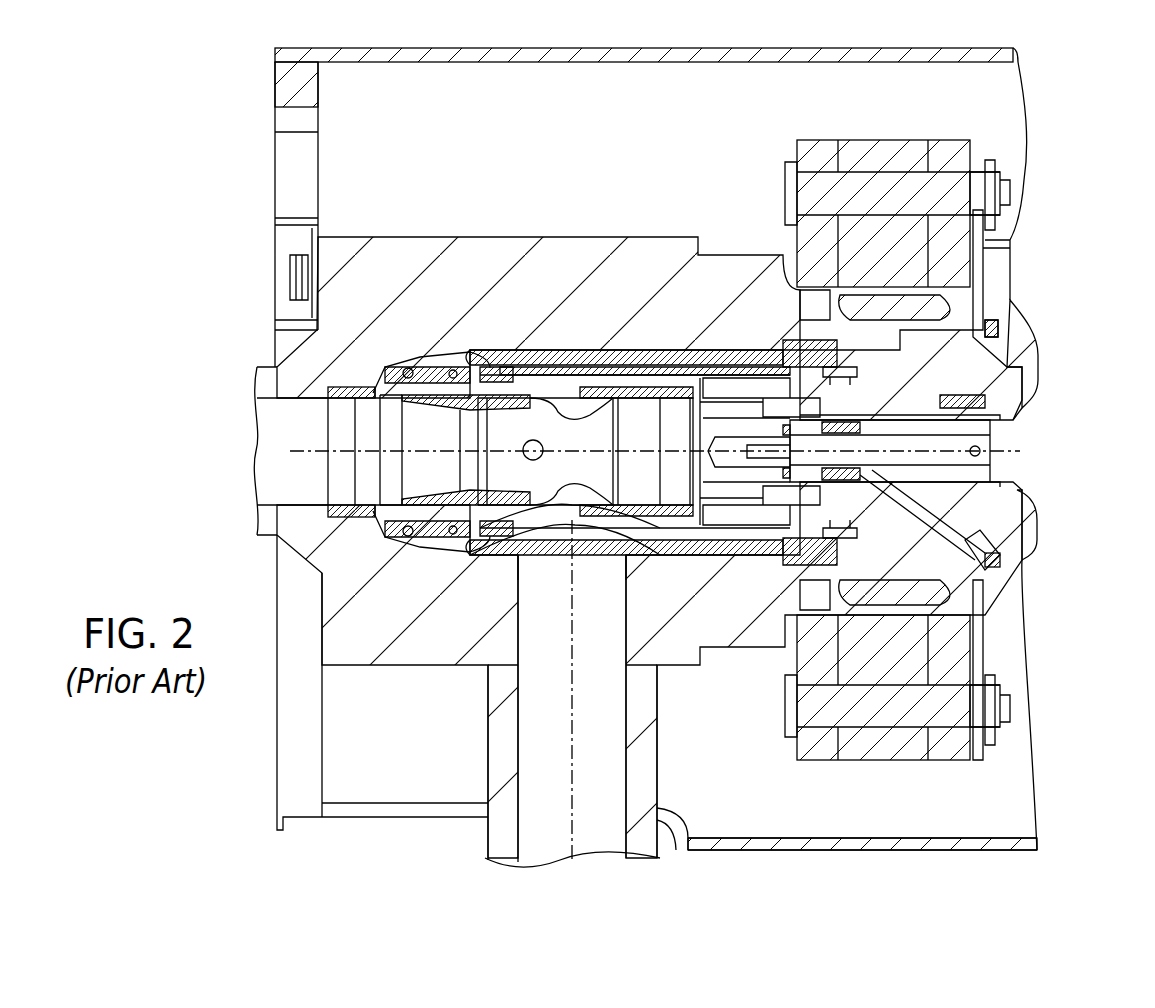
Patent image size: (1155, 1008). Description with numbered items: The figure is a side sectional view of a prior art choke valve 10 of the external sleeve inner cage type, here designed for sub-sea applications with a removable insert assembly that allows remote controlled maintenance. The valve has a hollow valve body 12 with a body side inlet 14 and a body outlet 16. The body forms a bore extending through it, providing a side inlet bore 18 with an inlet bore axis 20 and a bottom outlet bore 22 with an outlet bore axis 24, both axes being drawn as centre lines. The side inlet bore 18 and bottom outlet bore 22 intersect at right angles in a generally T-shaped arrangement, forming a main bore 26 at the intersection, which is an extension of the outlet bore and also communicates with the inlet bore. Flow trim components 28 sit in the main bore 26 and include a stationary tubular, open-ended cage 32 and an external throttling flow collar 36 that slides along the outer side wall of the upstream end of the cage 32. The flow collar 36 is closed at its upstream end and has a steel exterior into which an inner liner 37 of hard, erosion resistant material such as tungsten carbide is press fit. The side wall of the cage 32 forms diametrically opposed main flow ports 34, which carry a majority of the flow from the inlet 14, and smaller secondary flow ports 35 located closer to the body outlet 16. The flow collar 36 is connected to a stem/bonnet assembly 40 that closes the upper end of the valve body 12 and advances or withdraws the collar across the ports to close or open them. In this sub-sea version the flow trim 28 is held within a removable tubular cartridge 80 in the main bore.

The choke valve 10 is at (1044, 597).
The hollow valve body 12 is at (470, 240).
The body side inlet 14 is at (600, 812).
The body outlet 16 is at (263, 492).
The side inlet bore 18 is at (520, 678).
The inlet bore axis 20 is at (572, 752).
The bottom outlet bore 22 is at (300, 510).
The outlet bore axis 24 is at (290, 449).
The main bore 26 is at (557, 350).
The flow trim components 28 is at (565, 540).
The cage 32 is at (535, 395).
The main flow ports 34 is at (590, 414).
The secondary flow ports 35 is at (540, 447).
The flow collar 36 is at (650, 385).
The inner liner 37 is at (655, 393).
The stem/bonnet assembly 40 is at (960, 388).
The removable tubular cartridge 80 is at (620, 345).